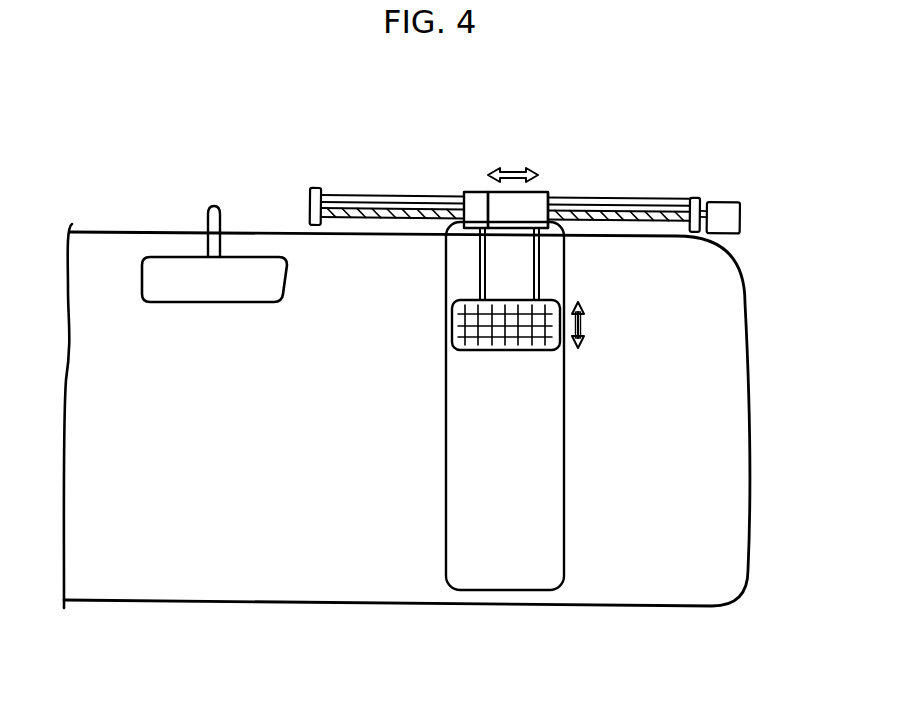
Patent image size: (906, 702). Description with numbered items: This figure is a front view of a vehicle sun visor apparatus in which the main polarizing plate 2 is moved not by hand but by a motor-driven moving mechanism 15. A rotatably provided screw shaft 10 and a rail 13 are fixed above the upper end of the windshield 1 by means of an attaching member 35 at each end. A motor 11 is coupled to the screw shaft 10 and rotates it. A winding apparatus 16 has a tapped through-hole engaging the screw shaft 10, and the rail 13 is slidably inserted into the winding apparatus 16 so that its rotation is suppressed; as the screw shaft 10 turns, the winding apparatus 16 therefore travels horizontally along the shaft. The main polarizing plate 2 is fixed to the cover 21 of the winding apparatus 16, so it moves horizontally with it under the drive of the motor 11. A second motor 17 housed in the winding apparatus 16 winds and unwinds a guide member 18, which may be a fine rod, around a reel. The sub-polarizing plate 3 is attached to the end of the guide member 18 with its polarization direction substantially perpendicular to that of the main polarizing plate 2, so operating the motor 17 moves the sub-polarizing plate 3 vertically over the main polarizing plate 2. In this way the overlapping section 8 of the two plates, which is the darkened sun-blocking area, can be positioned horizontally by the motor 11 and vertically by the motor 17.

The windshield 1 is at (295, 578).
The main polarizing plate 2 is at (445, 438).
The sub-polarizing plate 3 is at (553, 352).
The overlapping section 8 is at (460, 338).
The screw shaft 10 is at (397, 200).
The motor 11 is at (737, 220).
The rail 13 is at (655, 199).
The motor-driven moving mechanism 15 is at (487, 165).
The winding apparatus 16 is at (545, 188).
The motor 17 is at (477, 198).
The guide member 18 is at (480, 275).
The cover 21 is at (550, 192).
The attaching member 35 is at (318, 187).